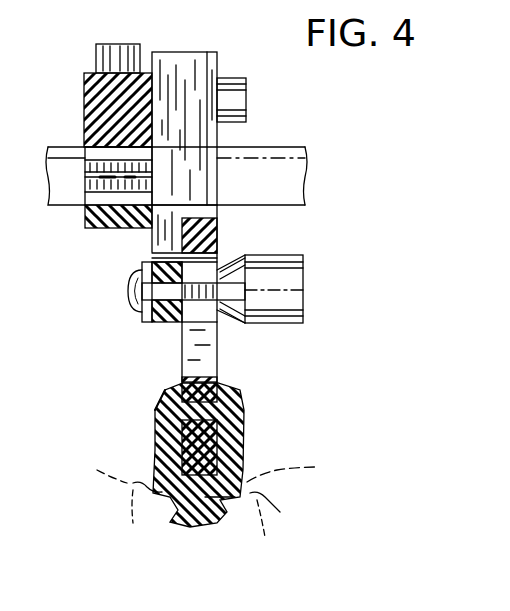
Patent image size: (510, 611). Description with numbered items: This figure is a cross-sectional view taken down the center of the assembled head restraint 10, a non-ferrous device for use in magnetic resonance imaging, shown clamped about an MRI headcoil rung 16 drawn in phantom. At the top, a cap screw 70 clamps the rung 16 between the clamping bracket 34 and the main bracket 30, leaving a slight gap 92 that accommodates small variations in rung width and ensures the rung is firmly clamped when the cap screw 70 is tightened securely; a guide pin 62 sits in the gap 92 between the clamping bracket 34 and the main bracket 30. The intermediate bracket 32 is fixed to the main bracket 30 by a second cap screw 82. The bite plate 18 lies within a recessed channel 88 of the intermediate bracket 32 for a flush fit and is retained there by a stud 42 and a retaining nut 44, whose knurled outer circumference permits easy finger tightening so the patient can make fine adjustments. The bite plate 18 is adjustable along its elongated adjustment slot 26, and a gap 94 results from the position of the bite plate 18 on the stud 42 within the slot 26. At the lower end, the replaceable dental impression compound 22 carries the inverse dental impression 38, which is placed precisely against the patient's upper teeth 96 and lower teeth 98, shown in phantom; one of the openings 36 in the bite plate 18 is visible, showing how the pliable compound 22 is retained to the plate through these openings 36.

The head restraint 10 is at (95, 350).
The headcoil rung 16 is at (289, 186).
The bite plate 18 is at (180, 351).
The dental impression compound 22 is at (230, 411).
The adjustment slot 26 is at (230, 333).
The main bracket 30 is at (92, 113).
The intermediate bracket 32 is at (205, 140).
The clamping bracket 34 is at (125, 216).
The opening 36 is at (163, 415).
The inverse dental impression 38 is at (248, 497).
The stud 42 is at (150, 310).
The retaining nut 44 is at (300, 287).
The guide pin 62 is at (84, 185).
The cap screw 70 is at (117, 62).
The cap screw 82 is at (237, 98).
The recessed channel 88 is at (215, 263).
The gap 92 is at (83, 189).
The gap 94 is at (222, 216).
The upper teeth 96 is at (151, 497).
The lower teeth 98 is at (257, 497).